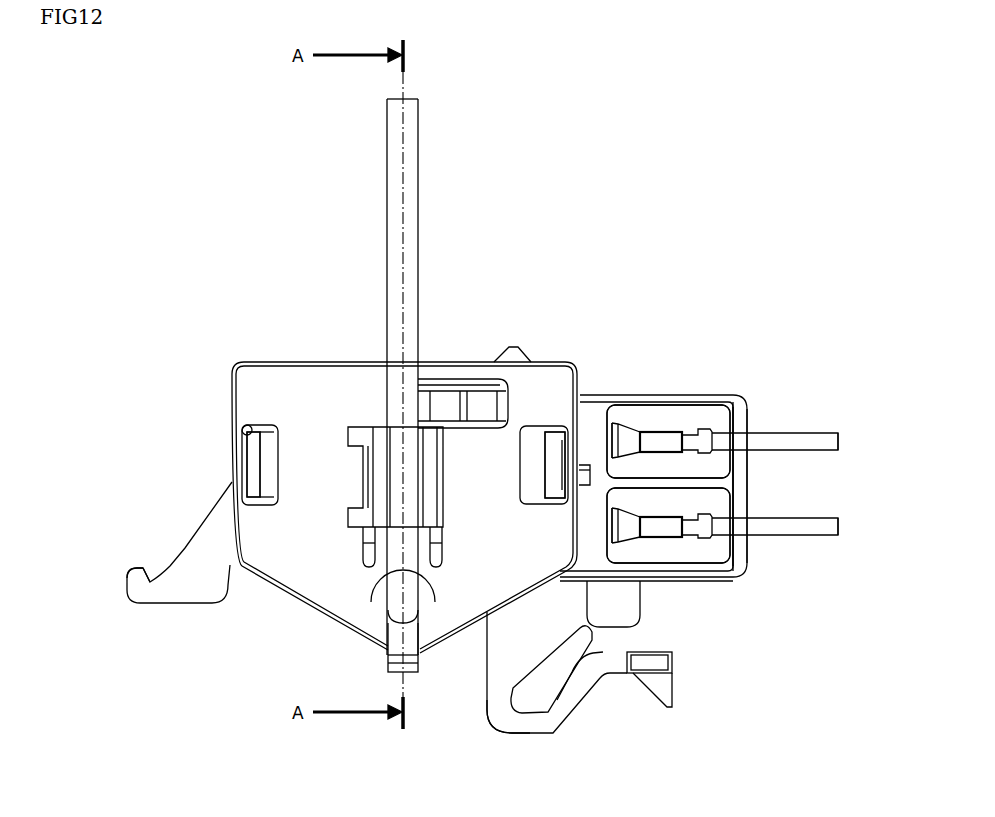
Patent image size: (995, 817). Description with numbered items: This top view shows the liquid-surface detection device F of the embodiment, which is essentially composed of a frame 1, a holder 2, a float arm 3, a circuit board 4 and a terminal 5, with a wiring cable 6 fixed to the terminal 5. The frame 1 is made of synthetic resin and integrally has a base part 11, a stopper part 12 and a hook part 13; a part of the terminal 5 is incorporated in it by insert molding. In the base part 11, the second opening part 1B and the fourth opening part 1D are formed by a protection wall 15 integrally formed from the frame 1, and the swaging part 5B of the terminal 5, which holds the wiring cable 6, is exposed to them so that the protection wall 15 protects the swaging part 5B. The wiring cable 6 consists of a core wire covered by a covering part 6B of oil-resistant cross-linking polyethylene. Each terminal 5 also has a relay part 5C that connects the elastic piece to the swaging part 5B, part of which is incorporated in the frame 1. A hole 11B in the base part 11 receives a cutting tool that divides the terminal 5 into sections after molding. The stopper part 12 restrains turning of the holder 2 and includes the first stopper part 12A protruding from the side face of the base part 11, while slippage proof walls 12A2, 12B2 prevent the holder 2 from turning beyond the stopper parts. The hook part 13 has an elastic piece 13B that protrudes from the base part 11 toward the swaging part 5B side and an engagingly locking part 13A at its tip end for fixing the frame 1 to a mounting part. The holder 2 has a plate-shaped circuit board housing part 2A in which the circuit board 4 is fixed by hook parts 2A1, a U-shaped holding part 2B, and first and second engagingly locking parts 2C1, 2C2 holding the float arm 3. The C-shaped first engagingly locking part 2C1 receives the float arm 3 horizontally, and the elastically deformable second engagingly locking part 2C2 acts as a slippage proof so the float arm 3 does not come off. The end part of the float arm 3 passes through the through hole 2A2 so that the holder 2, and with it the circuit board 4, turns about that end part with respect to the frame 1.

The frame 1 is at (599, 385).
The second opening part 1B is at (672, 412).
The fourth opening part 1D is at (690, 555).
The holder 2 is at (292, 342).
The circuit board housing part 2A is at (262, 385).
The hook part 2A1 is at (250, 427).
The through hole 2A2 is at (392, 606).
The holding part 2B is at (405, 673).
The first engagingly locking part 2C1 is at (386, 437).
The second engagingly locking part 2C2 is at (446, 398).
The float arm 3 is at (397, 178).
The circuit board 4 is at (262, 468).
The terminal 5 is at (683, 430).
The swaging part 5B is at (706, 430).
The relay part 5C is at (633, 440).
The wiring cable 6 is at (794, 428).
The covering part 6B is at (818, 437).
The base part 11 is at (588, 630).
The hole 11B is at (597, 460).
The stopper part 12 is at (165, 540).
The first stopper part 12A is at (143, 541).
The slippage proof wall 12A2 is at (130, 578).
The slippage proof wall 12B2 is at (500, 350).
The hook part 13 is at (591, 714).
The engagingly locking part 13A is at (668, 703).
The elastic piece 13B is at (525, 735).
The protection wall 15 is at (736, 420).
The liquid-surface detection device F is at (441, 280).